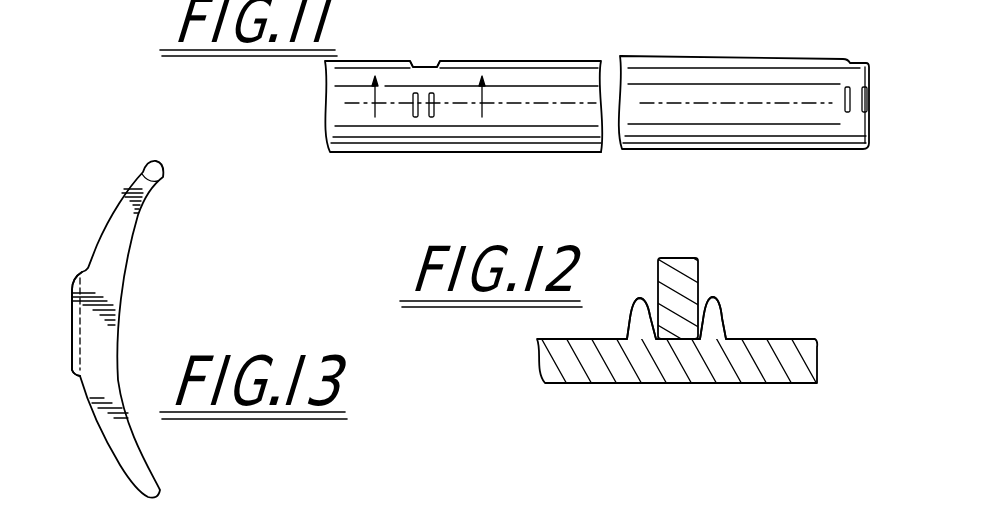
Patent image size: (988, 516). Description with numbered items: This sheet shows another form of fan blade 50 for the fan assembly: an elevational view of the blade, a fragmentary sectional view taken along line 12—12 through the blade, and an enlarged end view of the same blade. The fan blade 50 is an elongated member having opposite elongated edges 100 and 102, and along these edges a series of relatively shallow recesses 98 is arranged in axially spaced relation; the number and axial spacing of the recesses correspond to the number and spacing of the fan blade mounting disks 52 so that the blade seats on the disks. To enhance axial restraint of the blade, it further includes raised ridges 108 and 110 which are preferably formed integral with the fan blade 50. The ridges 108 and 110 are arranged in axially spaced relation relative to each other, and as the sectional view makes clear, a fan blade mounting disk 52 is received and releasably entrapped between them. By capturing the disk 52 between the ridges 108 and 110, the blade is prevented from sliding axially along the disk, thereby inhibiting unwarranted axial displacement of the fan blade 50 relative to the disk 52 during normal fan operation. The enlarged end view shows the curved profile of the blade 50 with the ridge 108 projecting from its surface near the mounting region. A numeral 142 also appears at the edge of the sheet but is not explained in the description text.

In FIG. 11, the section line 12— 12 is at (431, 102).
In FIG. 11, the fan blade 50 is at (719, 51).
In FIG. 12, the fan blade 50 is at (666, 393).
In FIG. 13, the fan blade 50 is at (146, 268).
In FIG. 12, the fan blade mounting disk 52 is at (710, 285).
In FIG. 11, the recess 98 is at (436, 63).
In FIG. 11, the elongated edge 100 is at (515, 61).
In FIG. 11, the elongated edge 102 is at (538, 152).
In FIG. 11, the raised ridge 108 is at (415, 118).
In FIG. 12, the raised ridge 108 is at (635, 304).
In FIG. 13, the raised ridge 108 is at (73, 376).
In FIG. 11, the raised ridge 110 is at (432, 118).
In FIG. 12, the raised ridge 110 is at (715, 325).
In FIG. 12, the reference element 142 is at (550, 510).